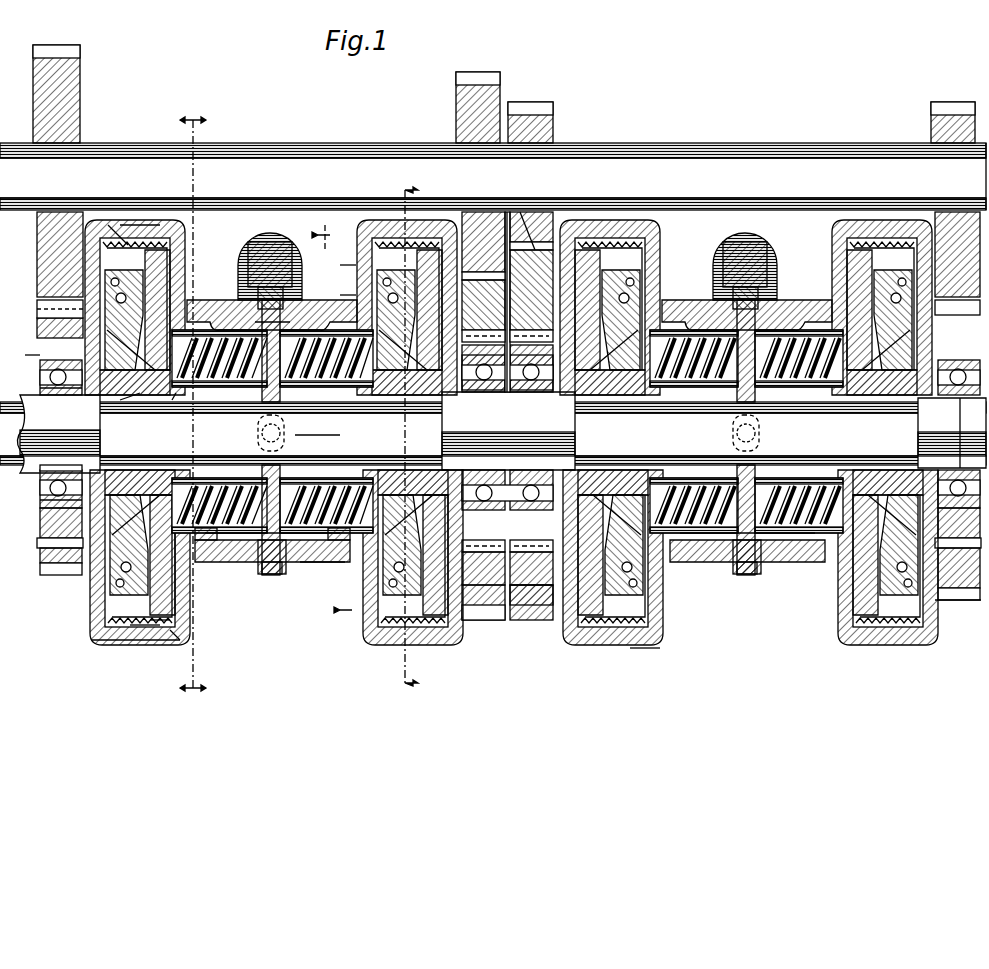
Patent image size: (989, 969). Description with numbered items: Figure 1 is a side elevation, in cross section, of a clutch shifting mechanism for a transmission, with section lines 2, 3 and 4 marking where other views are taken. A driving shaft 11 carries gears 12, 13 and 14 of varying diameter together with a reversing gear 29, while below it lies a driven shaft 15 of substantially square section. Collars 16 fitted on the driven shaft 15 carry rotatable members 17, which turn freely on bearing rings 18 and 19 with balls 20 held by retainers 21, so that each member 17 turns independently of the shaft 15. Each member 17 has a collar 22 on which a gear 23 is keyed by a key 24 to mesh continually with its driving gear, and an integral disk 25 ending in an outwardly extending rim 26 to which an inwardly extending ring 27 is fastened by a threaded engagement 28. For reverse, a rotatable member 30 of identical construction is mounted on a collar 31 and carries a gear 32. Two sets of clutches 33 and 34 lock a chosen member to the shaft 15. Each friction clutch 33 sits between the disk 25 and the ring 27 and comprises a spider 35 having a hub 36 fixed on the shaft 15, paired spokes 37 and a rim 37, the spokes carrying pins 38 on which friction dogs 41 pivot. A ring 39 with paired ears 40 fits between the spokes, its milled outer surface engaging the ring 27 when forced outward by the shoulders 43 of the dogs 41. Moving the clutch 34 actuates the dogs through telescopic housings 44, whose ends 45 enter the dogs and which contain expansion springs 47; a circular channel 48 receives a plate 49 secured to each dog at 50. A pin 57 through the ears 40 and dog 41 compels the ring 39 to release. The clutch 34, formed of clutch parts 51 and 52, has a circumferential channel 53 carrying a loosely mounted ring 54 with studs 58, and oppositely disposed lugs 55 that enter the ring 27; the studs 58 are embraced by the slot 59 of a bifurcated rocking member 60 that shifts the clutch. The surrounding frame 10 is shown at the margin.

The section line 2— 2 is at (407, 436).
The section line 3— 3 is at (193, 404).
The section line 4— 4 is at (332, 423).
The frame 10 is at (20, 354).
The driving shaft 11 is at (748, 150).
The gear 12 is at (70, 76).
The gear 13 is at (500, 85).
The gear 14 is at (548, 120).
The driven shaft 15 is at (855, 434).
The collar 16 is at (598, 426).
The rotatable member 17 is at (100, 645).
The bearing ring 18 is at (40, 465).
The bearing ring 19 is at (462, 395).
The ball 20 is at (45, 388).
The retainer 21 is at (50, 375).
The collar 22 is at (60, 290).
The gear 23 is at (62, 565).
The key 24 is at (543, 222).
The disk 25 is at (485, 222).
The outwardly extending rim 26 is at (420, 232).
The inwardly extending ring 27 is at (175, 228).
The threaded engagement 28 is at (160, 645).
The gear 29 is at (946, 106).
The rotatable member 30 is at (928, 658).
The collar 31 is at (951, 433).
The gear 32 is at (958, 600).
The clutch 33 is at (140, 285).
The clutch 34 is at (472, 303).
The spider 35 is at (40, 312).
The hub 36 is at (140, 225).
The spoke 37 is at (645, 646).
The pin 38 is at (112, 240).
The ring 39 is at (185, 640).
The ear 40 is at (358, 290).
The friction dog 41 is at (358, 330).
The shoulder 43 is at (150, 268).
The telescopic housing 44 is at (183, 393).
The housing end 45 is at (150, 393).
The expansion spring 47 is at (225, 393).
The circular channel 48 is at (262, 315).
The plate 49 is at (160, 300).
The plate fastening 50 is at (180, 310).
The lower plate 51 is at (240, 562).
The clutch part 52 is at (310, 562).
The circumferential channel 53 is at (278, 576).
The ring 54 is at (760, 290).
The lug 55 is at (210, 562).
The pin 57 is at (50, 255).
The stud 58 is at (783, 432).
The slot 59 is at (285, 250).
The bifurcated rocking member 60 is at (272, 240).